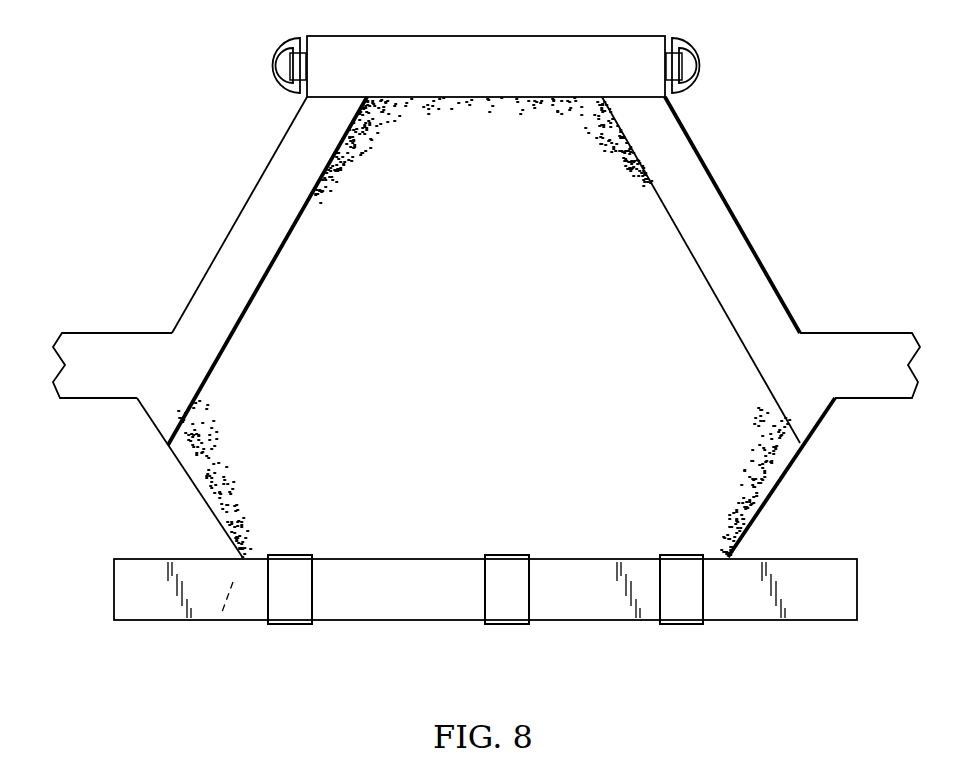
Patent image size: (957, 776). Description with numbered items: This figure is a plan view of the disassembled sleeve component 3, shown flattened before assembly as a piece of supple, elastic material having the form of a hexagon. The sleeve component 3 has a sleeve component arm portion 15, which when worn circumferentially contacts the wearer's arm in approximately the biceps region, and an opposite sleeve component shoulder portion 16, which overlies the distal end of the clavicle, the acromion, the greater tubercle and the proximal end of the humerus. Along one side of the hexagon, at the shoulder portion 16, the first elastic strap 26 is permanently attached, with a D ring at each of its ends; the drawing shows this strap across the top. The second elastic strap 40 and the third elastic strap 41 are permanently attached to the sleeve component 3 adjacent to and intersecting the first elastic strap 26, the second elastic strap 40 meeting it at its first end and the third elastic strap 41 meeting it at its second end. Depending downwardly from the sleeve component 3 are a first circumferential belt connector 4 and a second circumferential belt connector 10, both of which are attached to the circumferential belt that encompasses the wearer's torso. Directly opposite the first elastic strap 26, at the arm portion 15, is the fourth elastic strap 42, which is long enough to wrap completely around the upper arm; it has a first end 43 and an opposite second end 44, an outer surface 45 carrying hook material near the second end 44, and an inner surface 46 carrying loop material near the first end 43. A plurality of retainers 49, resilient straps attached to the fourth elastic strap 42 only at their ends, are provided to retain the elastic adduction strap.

The sleeve component 3 is at (511, 351).
The first circumferential belt connector 4 is at (113, 378).
The second circumferential belt connector 10 is at (884, 378).
The sleeve component arm portion 15 is at (394, 548).
The sleeve component shoulder portion 16 is at (522, 112).
The first elastic strap 26 is at (491, 79).
The second elastic strap 40 is at (271, 256).
The third elastic strap 41 is at (734, 256).
The fourth elastic strap 42 is at (482, 603).
The fourth elastic strap first end 43 is at (131, 593).
The fourth elastic strap second end 44 is at (836, 595).
The outer surface 45 is at (596, 597).
The inner surface 46 is at (223, 608).
The retainers 49 is at (288, 572).